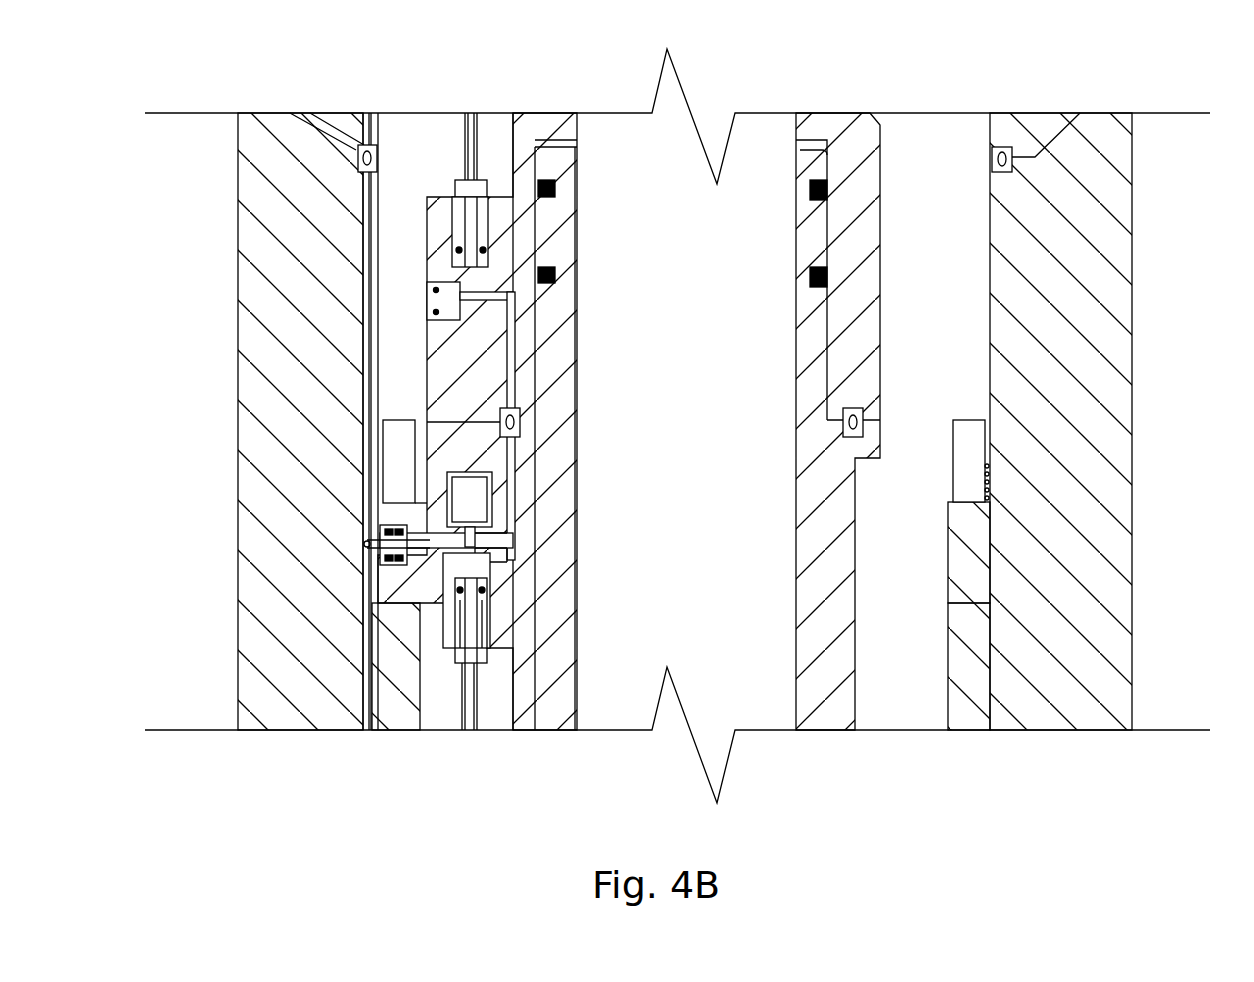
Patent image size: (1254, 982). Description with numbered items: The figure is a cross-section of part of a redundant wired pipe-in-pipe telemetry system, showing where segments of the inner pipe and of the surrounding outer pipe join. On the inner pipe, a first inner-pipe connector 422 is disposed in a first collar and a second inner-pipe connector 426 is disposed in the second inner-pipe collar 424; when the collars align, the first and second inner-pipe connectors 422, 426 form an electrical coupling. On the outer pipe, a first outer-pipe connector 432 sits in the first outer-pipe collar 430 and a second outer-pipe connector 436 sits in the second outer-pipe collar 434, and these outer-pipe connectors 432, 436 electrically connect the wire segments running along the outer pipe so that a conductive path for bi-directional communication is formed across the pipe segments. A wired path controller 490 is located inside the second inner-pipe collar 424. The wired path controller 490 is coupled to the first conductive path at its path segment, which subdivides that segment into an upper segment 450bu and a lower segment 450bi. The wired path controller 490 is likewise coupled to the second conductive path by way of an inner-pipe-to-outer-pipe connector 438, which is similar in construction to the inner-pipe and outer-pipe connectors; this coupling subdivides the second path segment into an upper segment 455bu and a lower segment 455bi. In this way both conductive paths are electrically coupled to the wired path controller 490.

The first inner-pipe connector 422 is at (520, 410).
The second inner-pipe collar 424 is at (858, 572).
The second inner-pipe connector 426 is at (860, 408).
The first outer-pipe collar 430 is at (1055, 137).
The first outer-pipe connector 432 is at (358, 148).
The second outer-pipe collar 434 is at (948, 667).
The second outer-pipe connector 436 is at (1012, 155).
The inner-pipe-to-outer-pipe connector 438 is at (393, 527).
The upper segment 450bu is at (477, 568).
The lower segment 450bi is at (490, 555).
The upper segment 455bu is at (363, 448).
The lower segment 455bi is at (363, 660).
The wired path controller 490 is at (492, 507).